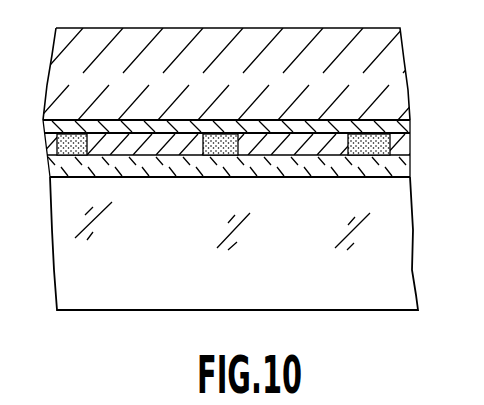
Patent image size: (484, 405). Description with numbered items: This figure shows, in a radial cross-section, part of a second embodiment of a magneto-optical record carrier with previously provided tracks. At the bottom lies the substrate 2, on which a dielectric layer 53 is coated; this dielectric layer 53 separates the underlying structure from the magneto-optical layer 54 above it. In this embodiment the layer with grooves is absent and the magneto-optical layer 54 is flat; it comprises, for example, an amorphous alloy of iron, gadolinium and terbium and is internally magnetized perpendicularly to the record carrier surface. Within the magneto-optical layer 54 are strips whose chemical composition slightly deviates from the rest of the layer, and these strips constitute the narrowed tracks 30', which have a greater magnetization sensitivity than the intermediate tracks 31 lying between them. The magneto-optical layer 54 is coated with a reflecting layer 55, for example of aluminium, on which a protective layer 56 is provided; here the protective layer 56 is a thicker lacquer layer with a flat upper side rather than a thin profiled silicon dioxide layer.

The substrate 2 is at (385, 289).
The tracks 30' is at (252, 170).
The intermediate tracks 31 is at (328, 152).
The dielectric layer 53 is at (395, 170).
The magneto-optical layer 54 is at (397, 147).
The reflecting layer 55 is at (410, 130).
The protective layer 56 is at (385, 72).